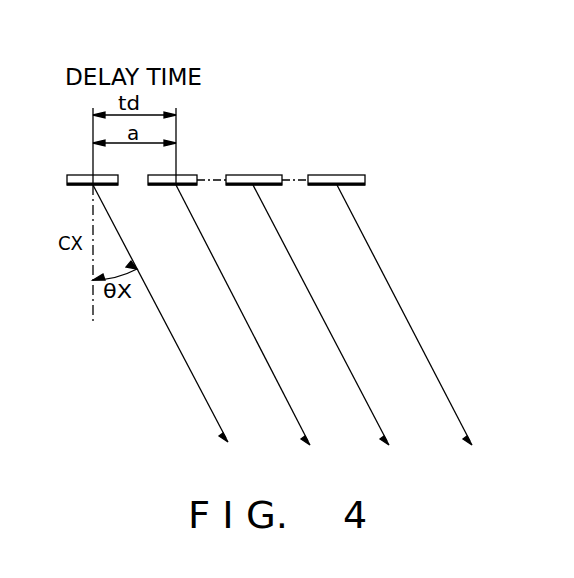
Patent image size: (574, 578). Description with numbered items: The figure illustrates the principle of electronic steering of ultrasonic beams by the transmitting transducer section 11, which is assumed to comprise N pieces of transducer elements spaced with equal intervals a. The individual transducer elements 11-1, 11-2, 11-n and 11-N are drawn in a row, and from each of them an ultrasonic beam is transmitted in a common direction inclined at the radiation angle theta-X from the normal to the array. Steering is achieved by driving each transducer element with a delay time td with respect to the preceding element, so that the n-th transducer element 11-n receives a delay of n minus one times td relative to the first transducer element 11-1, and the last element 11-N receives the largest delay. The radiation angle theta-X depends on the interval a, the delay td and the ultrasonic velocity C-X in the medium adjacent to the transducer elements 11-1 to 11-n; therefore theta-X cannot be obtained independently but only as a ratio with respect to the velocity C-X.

The transmitting transducer section 11 is at (473, 102).
The first transducer element 11-1 is at (106, 176).
The second transducer element 11-2 is at (188, 176).
The n-th transducer element 11-n is at (259, 176).
The N-th transducer element 11-N is at (342, 176).